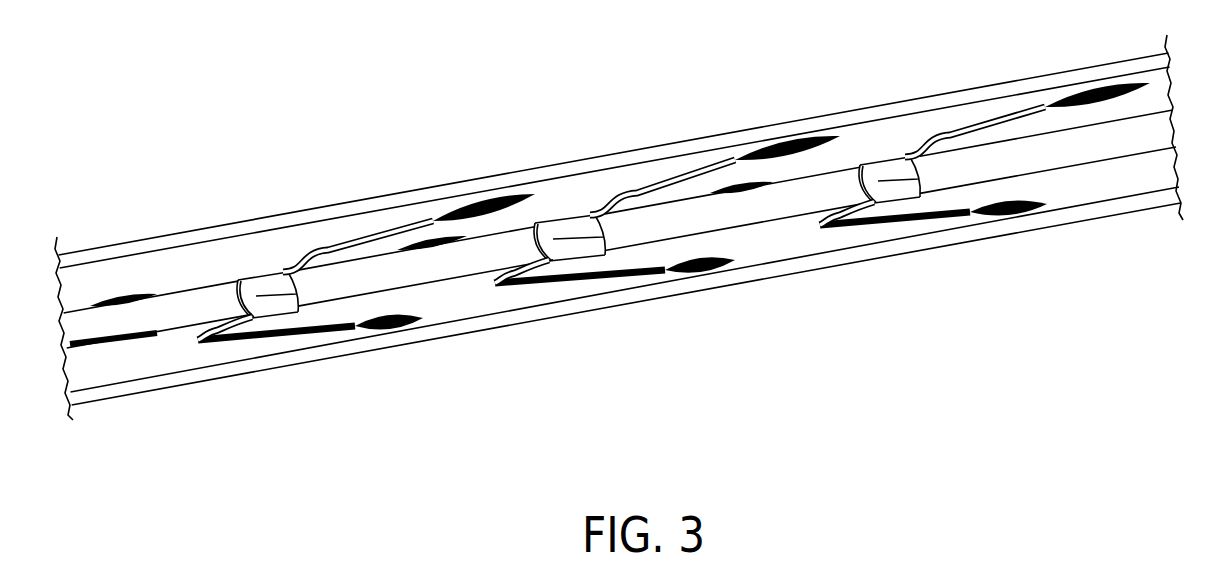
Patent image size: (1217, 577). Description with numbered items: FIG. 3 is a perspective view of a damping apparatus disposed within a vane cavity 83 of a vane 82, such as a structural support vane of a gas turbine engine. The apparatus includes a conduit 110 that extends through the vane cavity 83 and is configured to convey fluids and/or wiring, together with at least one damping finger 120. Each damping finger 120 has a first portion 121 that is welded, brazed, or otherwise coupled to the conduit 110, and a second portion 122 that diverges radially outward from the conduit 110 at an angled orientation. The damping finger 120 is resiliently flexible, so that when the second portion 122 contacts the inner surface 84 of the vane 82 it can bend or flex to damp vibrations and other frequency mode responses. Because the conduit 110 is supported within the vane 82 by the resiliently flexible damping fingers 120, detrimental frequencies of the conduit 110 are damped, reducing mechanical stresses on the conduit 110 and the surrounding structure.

The vane 82 is at (822, 265).
The vane cavity 83 is at (853, 233).
The inner surface 84 is at (408, 209).
The conduit 110 is at (687, 215).
The damping finger 120 is at (273, 257).
The first portion 121 is at (567, 228).
The second portion 122 is at (755, 142).